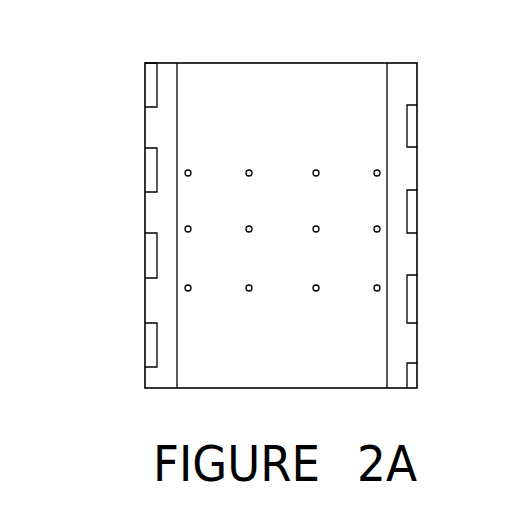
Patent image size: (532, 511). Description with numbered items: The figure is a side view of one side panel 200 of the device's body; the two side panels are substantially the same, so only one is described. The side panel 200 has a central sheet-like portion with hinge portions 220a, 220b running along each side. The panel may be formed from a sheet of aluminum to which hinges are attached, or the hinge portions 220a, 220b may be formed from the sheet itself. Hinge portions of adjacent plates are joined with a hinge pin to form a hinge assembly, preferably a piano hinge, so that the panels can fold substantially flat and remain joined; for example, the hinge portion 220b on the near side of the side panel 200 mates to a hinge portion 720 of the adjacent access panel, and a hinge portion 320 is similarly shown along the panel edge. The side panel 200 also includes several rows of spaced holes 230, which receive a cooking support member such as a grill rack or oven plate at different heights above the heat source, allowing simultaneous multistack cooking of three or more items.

The side panel 200 is at (211, 225).
The hinge portion 220a is at (107, 225).
The hinge portion 220b is at (458, 208).
The left rail slots 720 is at (97, 215).
The right rail slots 320 is at (468, 221).
The holes 230 is at (190, 170).